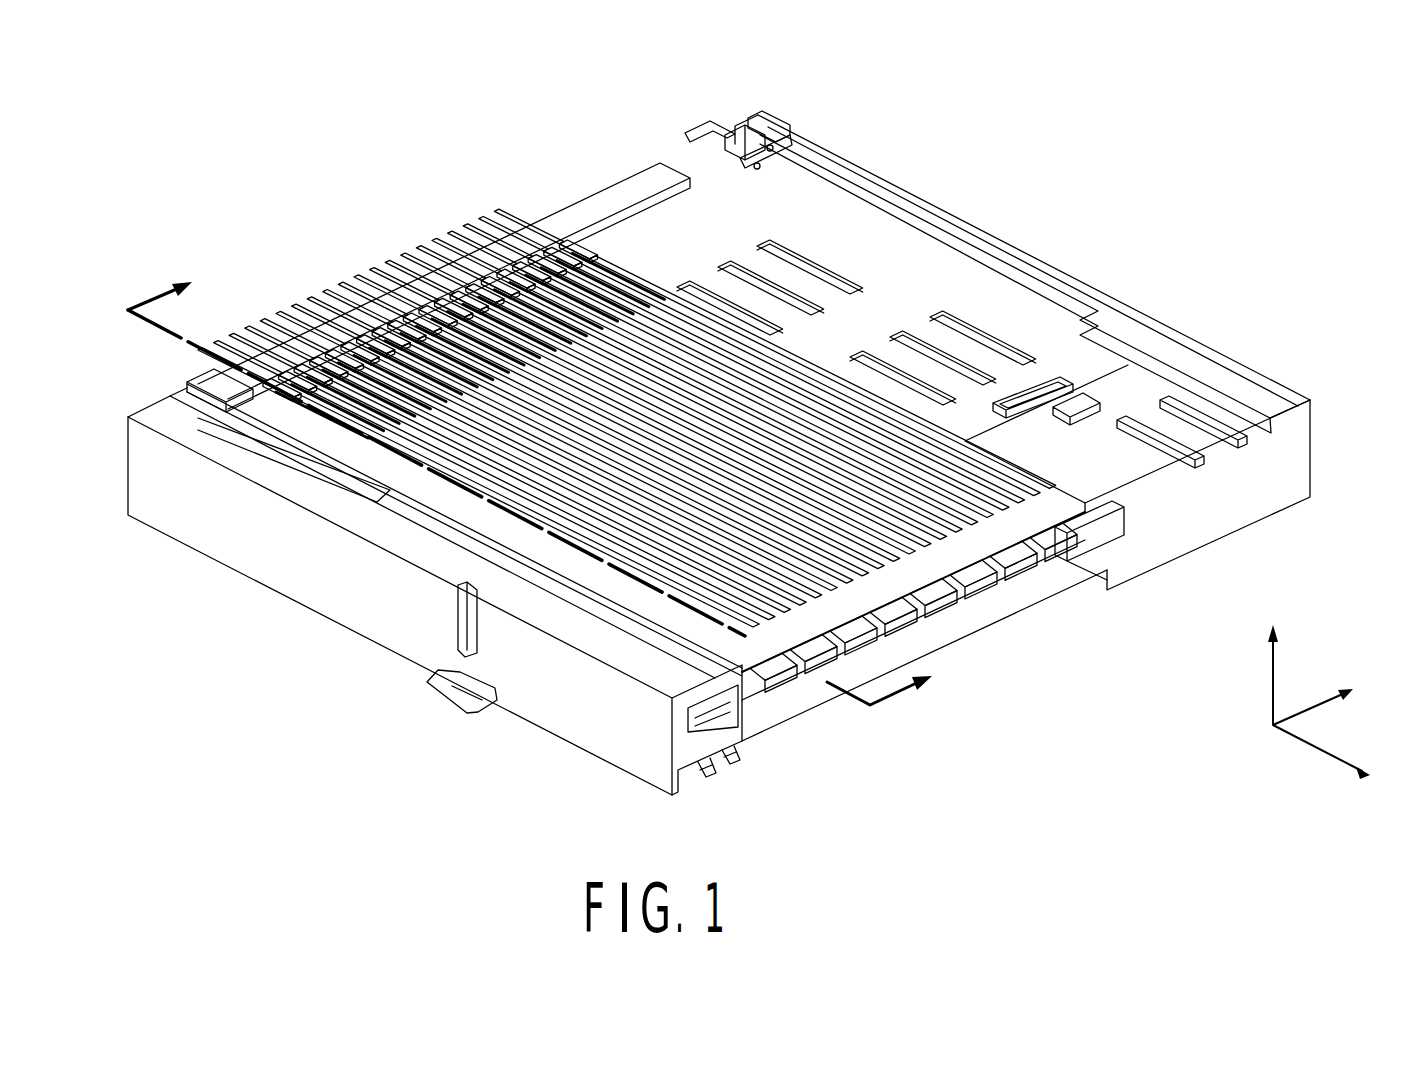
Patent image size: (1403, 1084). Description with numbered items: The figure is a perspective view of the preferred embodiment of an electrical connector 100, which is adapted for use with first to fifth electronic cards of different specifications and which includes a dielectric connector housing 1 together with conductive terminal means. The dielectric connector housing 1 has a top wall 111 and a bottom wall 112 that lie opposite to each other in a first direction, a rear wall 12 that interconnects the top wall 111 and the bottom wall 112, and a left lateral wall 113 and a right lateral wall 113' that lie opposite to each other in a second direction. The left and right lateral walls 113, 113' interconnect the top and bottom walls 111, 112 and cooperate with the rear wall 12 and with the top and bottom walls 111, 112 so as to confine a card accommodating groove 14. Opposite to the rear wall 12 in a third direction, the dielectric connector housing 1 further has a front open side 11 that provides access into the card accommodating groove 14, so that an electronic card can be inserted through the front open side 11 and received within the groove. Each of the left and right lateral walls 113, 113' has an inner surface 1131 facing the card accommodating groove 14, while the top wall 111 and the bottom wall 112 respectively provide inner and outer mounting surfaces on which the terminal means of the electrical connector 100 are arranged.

The electrical connector 100 is at (1041, 168).
The dielectric connector housing 1 is at (852, 152).
The front open side 11 is at (993, 615).
The top wall 111 is at (818, 337).
The bottom wall 112 is at (963, 607).
The left lateral wall 113 is at (505, 586).
The right lateral wall 113' is at (1022, 274).
The inner surface 1131 is at (745, 728).
The rear wall 12 is at (683, 147).
The card accommodating groove 14 is at (1013, 590).